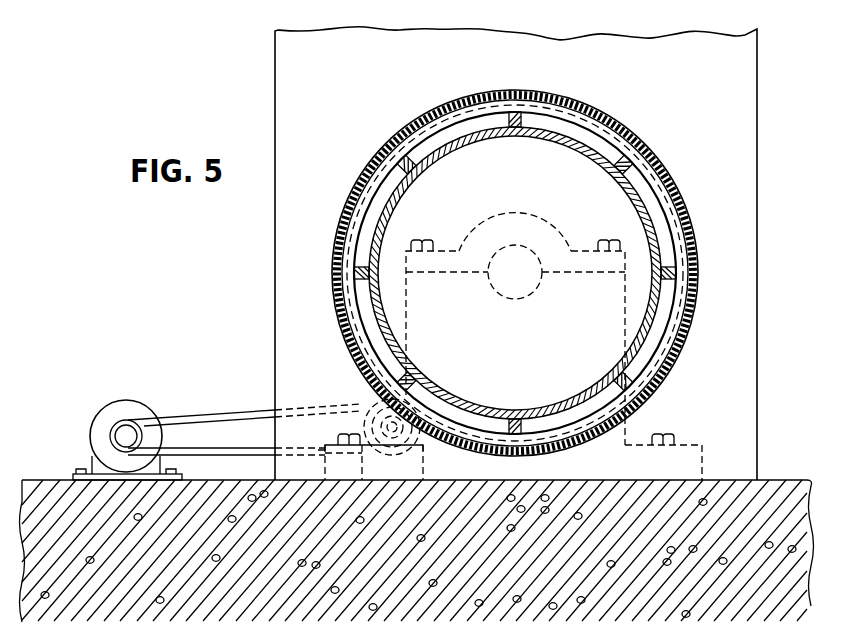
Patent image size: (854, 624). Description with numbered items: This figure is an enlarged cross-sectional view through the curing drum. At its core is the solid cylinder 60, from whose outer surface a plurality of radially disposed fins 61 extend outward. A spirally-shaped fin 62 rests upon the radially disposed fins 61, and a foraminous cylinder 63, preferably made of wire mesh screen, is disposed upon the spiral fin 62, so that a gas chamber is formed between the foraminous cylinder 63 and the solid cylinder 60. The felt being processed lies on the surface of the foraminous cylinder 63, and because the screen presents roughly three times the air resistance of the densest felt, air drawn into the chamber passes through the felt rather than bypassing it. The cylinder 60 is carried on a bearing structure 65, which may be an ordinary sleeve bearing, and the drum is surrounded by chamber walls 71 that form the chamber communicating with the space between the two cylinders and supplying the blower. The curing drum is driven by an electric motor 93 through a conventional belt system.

The cylinder 60 is at (515, 272).
The radially disposed fins 61 is at (515, 273).
The spirally-shaped fin 62 is at (515, 273).
The foraminous cylinder 63 is at (515, 257).
The bearing structure 65 is at (533, 217).
The chamber walls 71 is at (746, 248).
The electric motor 93 is at (128, 408).